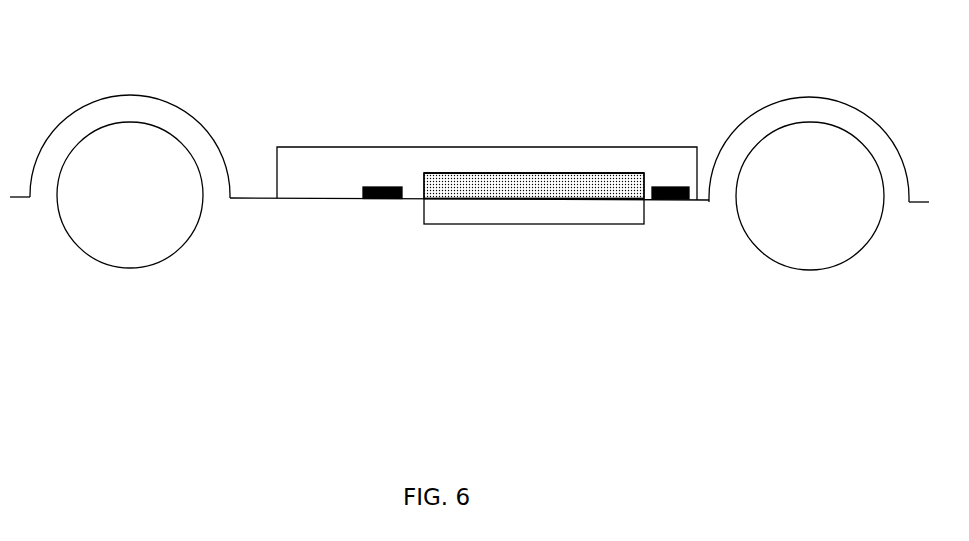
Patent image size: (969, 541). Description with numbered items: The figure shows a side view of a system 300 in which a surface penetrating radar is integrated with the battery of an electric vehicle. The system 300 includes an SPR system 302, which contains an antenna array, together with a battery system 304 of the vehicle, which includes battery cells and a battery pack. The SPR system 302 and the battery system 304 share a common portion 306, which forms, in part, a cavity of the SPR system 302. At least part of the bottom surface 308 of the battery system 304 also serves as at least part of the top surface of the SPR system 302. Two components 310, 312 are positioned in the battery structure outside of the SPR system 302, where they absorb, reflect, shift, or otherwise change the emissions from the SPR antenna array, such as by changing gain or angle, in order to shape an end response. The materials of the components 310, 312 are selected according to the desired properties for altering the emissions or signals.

The system 300 is at (488, 46).
The SPR system 302 is at (508, 224).
The battery system 304 is at (328, 146).
The portion 306 is at (462, 183).
The surface 308 is at (621, 174).
The component 310 is at (377, 199).
The component 312 is at (682, 199).